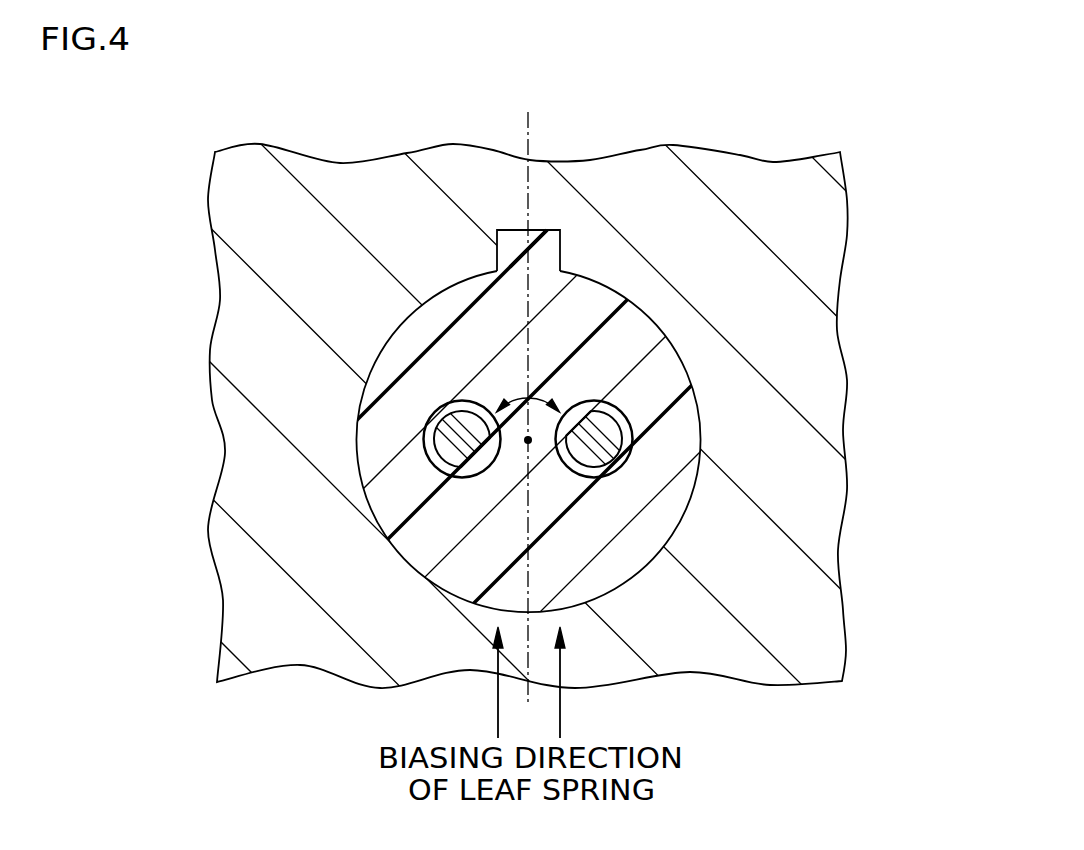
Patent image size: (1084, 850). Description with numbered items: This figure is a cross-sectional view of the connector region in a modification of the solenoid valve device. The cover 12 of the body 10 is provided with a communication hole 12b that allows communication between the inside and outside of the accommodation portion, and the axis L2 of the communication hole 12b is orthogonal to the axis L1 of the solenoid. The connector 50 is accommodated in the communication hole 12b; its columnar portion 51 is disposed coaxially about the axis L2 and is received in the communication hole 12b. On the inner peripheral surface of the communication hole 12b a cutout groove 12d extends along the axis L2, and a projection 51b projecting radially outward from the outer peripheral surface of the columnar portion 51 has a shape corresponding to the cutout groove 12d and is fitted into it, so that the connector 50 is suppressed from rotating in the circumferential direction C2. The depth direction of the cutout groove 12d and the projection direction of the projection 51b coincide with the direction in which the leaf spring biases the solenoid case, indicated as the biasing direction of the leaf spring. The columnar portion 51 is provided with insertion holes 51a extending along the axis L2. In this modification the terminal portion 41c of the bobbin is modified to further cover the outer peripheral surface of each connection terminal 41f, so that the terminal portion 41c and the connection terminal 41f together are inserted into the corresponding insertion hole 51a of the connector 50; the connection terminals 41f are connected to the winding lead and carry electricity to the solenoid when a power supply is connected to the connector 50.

The body 10 is at (542, 425).
The cover 12 is at (820, 232).
The communication hole 12b is at (677, 526).
The cutout groove 12d is at (559, 240).
The connector 50 is at (564, 400).
The columnar portion 51 is at (643, 307).
The insertion hole 51a is at (462, 401).
The projection 51b is at (497, 263).
The terminal portion 41c is at (434, 462).
The connection terminal 41f is at (459, 466).
The axis L1 is at (538, 122).
The axis L2 is at (535, 447).
The circumferential direction C2 is at (528, 385).